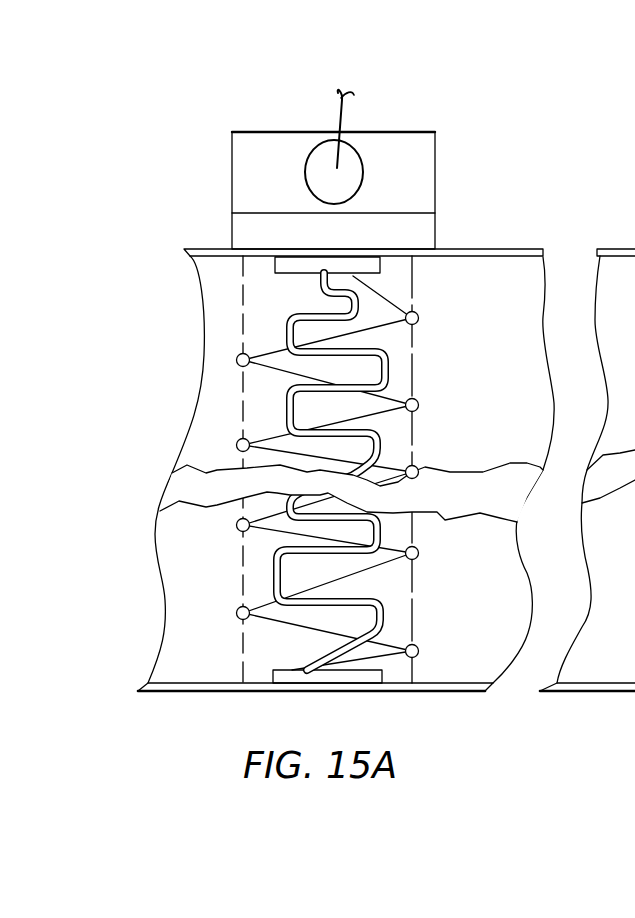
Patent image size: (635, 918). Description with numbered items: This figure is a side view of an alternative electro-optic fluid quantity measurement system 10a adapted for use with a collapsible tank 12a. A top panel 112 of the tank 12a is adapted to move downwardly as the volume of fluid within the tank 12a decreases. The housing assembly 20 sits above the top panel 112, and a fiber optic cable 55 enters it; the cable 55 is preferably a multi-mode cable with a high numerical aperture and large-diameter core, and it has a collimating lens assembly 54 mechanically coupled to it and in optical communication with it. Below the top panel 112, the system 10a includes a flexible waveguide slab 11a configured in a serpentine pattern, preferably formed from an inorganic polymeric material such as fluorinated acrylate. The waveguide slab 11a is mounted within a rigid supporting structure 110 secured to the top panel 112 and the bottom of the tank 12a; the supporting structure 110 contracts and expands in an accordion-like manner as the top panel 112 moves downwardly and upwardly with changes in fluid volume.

The housing assembly 20 is at (265, 108).
The fiber optic cable 55 is at (345, 114).
The collimating lens assembly 54 is at (354, 146).
The alternative electro-optic fluid quantity measurement system 10a is at (526, 107).
The top panel 112 is at (503, 248).
The supporting structure 110 is at (406, 311).
The flexible waveguide slab 11a is at (391, 372).
The collapsible tank 12a is at (126, 650).